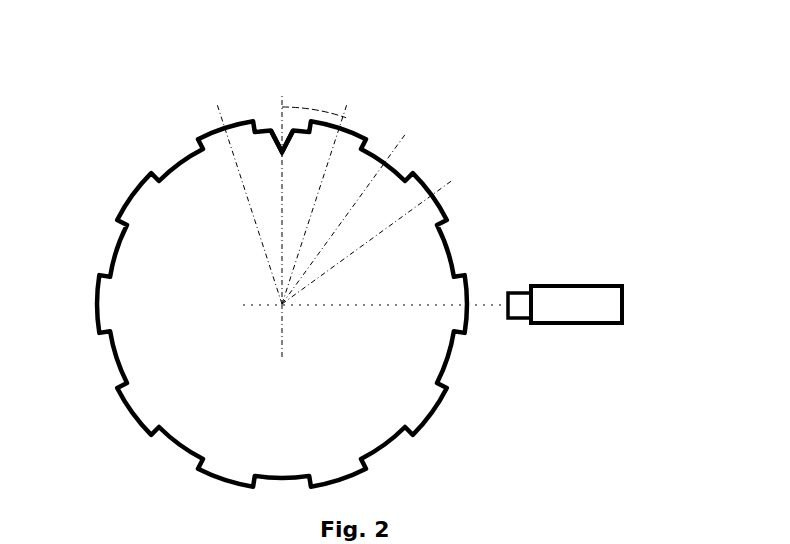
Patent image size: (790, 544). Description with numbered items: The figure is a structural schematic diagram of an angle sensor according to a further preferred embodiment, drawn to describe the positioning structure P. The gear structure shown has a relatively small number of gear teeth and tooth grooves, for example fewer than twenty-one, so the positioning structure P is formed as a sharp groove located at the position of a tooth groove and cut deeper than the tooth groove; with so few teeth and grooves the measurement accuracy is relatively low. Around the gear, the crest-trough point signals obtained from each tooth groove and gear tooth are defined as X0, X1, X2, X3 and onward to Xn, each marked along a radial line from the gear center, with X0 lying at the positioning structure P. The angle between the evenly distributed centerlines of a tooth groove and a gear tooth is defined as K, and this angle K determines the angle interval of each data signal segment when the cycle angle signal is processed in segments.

The positioning structure P is at (268, 74).
The angle between centerlines of the tooth groove and the gear tooth K is at (314, 97).
The crest-trough point signal Xn is at (249, 204).
The crest-trough point signal X0 is at (292, 225).
The crest-trough point signal X1 is at (314, 204).
The crest-trough point signal X2 is at (343, 219).
The crest-trough point signal X3 is at (367, 242).